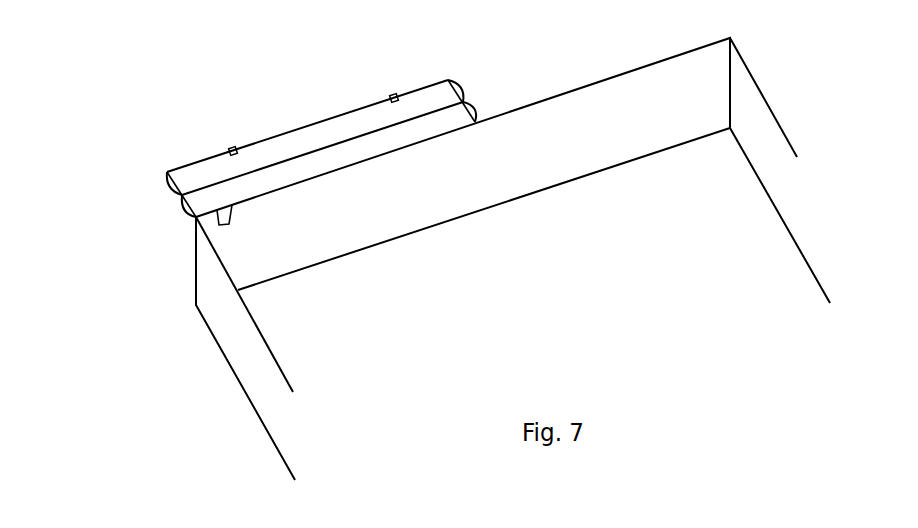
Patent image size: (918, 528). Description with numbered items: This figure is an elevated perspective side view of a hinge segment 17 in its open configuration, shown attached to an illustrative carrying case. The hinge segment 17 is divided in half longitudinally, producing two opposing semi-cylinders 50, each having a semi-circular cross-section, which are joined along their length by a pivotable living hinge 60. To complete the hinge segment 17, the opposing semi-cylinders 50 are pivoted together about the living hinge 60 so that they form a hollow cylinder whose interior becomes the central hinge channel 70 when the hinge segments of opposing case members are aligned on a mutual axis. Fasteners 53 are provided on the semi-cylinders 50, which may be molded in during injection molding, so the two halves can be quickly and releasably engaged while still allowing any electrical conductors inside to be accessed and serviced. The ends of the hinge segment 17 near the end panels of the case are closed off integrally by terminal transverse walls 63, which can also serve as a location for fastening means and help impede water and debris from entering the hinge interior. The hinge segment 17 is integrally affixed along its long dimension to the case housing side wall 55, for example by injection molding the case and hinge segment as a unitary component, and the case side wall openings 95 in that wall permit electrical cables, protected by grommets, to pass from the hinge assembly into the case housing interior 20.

The hinge segment 17 is at (194, 130).
The case housing interior 20 is at (595, 304).
The semi-cylinders 50 is at (467, 112).
The fasteners 53 is at (233, 148).
The case housing side wall 55 is at (358, 211).
The living hinge 60 is at (213, 182).
The terminal transverse walls 63 is at (188, 205).
The central hinge channel 70 is at (430, 128).
The case side wall openings 95 is at (197, 219).